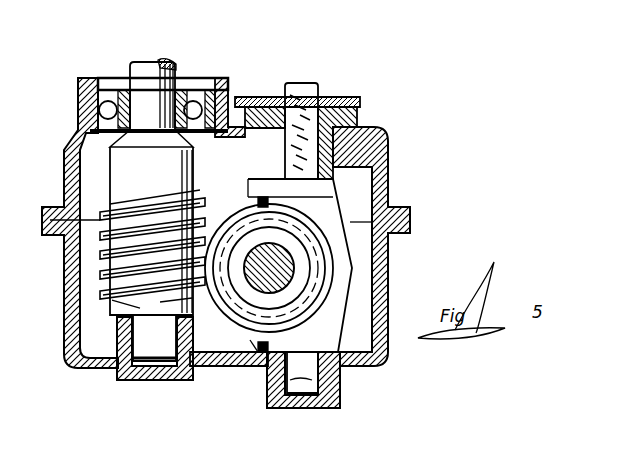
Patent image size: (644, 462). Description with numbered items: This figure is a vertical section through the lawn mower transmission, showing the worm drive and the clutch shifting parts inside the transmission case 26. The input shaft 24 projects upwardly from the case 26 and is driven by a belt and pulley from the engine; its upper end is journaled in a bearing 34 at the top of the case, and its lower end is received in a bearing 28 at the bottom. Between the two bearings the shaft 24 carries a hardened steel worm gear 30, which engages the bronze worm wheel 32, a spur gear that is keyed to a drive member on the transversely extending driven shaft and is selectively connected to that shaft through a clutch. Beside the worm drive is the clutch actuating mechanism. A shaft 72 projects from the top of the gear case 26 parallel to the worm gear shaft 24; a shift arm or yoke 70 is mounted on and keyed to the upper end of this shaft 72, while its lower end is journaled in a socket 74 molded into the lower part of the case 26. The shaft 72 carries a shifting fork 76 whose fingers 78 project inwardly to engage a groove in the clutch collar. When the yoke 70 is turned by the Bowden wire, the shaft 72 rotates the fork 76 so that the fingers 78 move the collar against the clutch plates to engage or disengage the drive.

The input shaft 24 is at (140, 78).
The transmission case 26 is at (74, 158).
The bearing 28 is at (118, 364).
The worm gear 30 is at (100, 268).
The worm wheel 32 is at (300, 270).
The bearing 34 is at (208, 98).
The shift arm or yoke 70 is at (333, 100).
The shaft 72 is at (305, 95).
The socket 74 is at (336, 385).
The shifting fork 76 is at (318, 198).
The fingers 78 is at (262, 197).